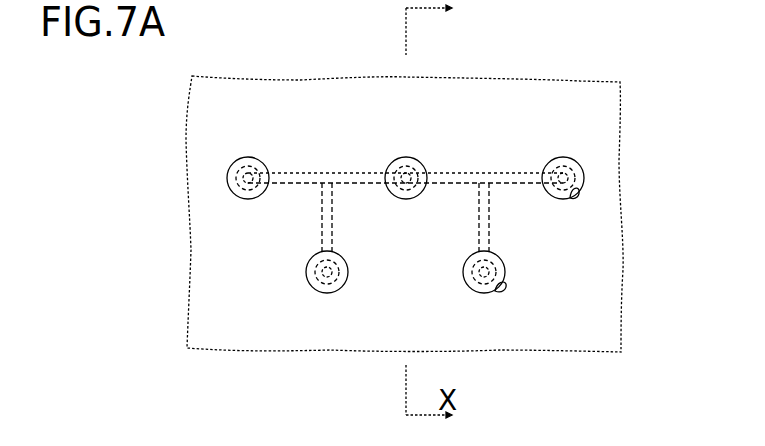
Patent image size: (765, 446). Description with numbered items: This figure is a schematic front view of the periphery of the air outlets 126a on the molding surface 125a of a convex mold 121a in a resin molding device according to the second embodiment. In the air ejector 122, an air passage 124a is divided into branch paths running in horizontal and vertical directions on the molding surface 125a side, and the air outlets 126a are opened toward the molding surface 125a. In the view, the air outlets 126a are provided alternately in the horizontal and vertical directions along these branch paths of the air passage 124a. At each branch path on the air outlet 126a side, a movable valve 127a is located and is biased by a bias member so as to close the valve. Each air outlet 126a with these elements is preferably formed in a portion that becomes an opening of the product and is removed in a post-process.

The convex mold 121a is at (586, 97).
The air ejector 122 is at (588, 174).
The air passage 124a is at (299, 178).
The molding surface 125a is at (600, 281).
The air outlet 126a is at (572, 197).
The movable valve 127a is at (228, 175).